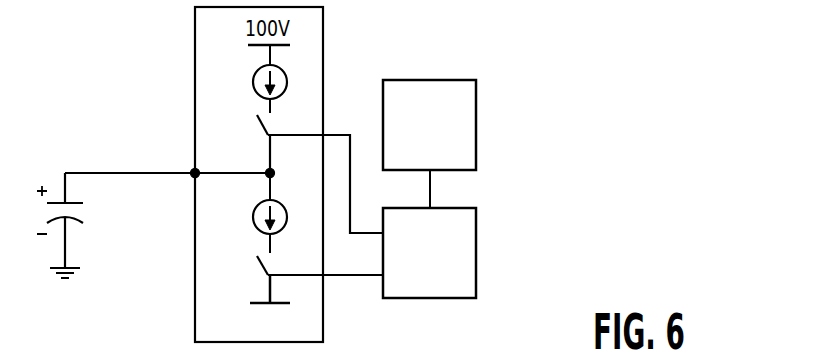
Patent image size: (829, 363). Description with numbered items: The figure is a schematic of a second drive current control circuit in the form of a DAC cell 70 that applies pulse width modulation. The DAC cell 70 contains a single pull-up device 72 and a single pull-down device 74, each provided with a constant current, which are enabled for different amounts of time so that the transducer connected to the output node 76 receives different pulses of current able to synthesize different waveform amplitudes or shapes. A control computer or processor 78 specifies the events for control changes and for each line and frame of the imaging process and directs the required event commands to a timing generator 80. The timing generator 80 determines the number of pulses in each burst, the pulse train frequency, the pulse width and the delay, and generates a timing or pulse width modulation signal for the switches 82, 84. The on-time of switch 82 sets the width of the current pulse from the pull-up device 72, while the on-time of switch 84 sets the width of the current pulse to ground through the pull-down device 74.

The DAC cell 70 is at (169, 54).
The pull-up device 72 is at (253, 80).
The pull-down device 74 is at (254, 209).
The output node 76 is at (195, 172).
The processor 78 is at (476, 133).
The timing generator 80 is at (476, 255).
The switch 82 is at (256, 126).
The switch 84 is at (256, 274).